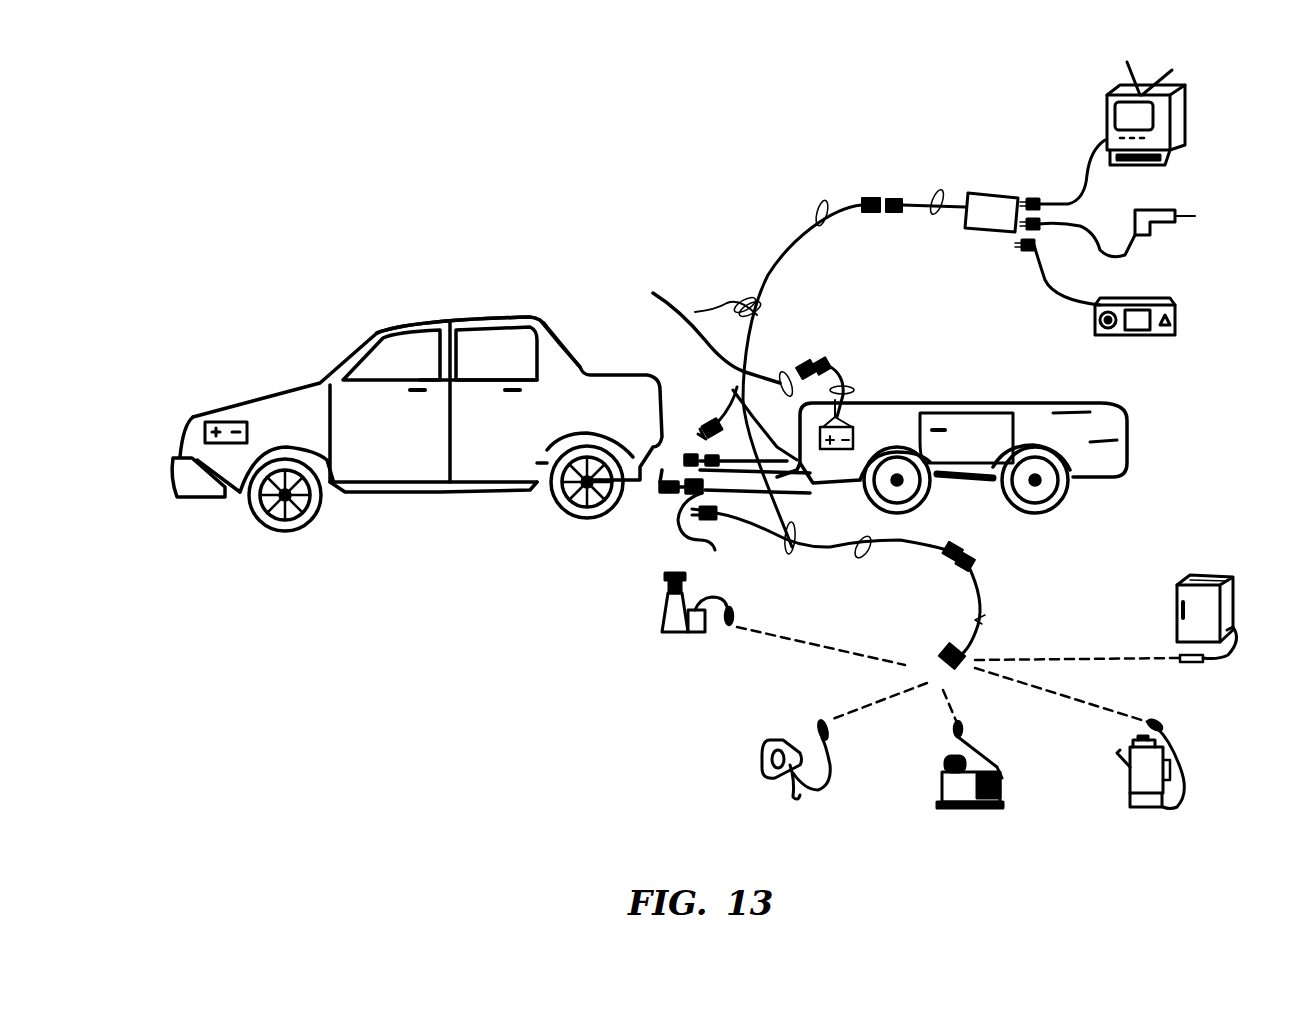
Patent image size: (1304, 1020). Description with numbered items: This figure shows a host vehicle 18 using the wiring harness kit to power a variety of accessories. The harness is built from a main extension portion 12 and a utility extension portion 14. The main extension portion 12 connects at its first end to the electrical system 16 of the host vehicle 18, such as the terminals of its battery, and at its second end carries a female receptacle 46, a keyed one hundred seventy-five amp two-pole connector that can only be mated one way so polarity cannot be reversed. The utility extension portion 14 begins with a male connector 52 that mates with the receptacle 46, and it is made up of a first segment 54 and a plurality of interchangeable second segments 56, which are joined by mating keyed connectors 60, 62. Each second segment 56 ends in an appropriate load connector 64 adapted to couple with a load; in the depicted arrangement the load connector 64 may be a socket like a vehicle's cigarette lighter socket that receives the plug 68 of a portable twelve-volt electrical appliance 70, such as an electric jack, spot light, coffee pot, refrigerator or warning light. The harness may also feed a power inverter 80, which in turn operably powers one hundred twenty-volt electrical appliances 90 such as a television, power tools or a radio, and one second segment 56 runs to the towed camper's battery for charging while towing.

The main extension portion 12 is at (470, 485).
The utility extension portion 14 is at (677, 317).
The electrical system 16 is at (231, 425).
The host vehicle 18 is at (375, 338).
The female receptacle 46 is at (655, 510).
The male connector 52 is at (715, 418).
The first segment 54 is at (827, 215).
The second segments 56 is at (945, 195).
The keyed connector 60 is at (875, 196).
The keyed connector 62 is at (893, 213).
The load connector 64 is at (940, 650).
The plug 68 is at (734, 612).
The portable 12-volt electrical appliance 70 is at (682, 643).
The power inverter 80 is at (1007, 250).
The 120-volt electrical appliances 90 is at (1108, 80).